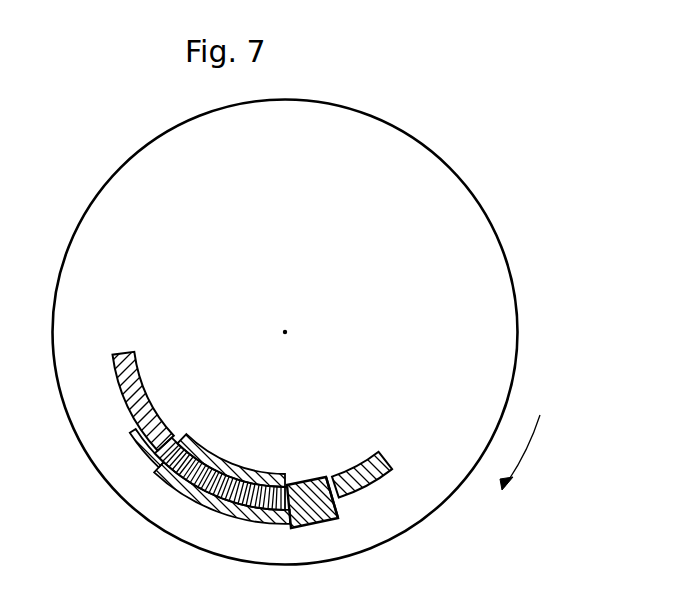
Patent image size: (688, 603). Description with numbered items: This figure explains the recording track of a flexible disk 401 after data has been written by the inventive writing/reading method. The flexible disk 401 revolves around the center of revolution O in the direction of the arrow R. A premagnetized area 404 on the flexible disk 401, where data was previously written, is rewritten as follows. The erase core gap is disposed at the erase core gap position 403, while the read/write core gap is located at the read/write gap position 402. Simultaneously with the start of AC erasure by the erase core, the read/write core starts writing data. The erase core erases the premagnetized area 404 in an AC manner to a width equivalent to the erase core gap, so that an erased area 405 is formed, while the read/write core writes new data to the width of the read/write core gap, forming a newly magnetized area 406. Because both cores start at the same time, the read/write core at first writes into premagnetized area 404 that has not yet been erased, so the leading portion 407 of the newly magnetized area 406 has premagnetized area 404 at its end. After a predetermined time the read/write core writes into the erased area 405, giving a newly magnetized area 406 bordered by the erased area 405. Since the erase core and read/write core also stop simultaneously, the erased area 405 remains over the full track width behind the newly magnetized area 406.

The flexible disk 401 is at (468, 228).
The read/write gap position 402 is at (302, 522).
The erase core gap position 403 is at (340, 518).
The premagnetized area 404 is at (122, 353).
The erased area 405 is at (282, 489).
The newly magnetized area 406 is at (183, 500).
The leading portion 407 is at (140, 447).
The center of revolution O is at (291, 334).
The direction of revolution R is at (537, 460).